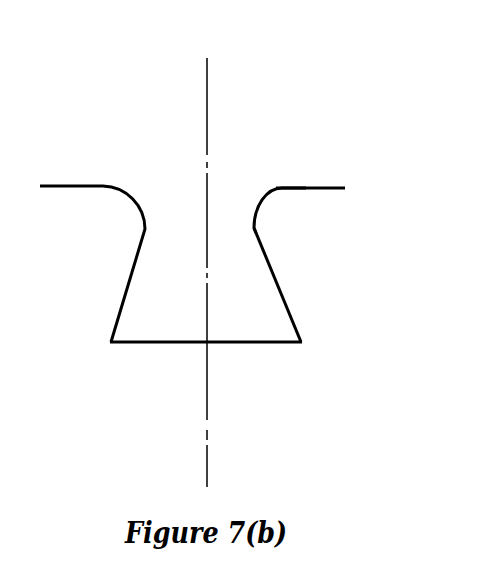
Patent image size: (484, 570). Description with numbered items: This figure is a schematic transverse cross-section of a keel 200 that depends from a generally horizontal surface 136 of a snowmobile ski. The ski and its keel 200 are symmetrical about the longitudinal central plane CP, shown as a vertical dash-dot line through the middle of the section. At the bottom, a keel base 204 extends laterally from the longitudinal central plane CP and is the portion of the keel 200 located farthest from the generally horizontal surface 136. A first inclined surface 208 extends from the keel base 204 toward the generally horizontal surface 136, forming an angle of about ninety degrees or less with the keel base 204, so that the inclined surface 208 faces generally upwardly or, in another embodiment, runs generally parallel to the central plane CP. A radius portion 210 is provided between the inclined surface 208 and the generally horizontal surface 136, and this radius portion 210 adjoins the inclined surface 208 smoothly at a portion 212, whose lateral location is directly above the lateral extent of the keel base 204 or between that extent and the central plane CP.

The longitudinal central plane CP is at (207, 73).
The keel 200 is at (247, 257).
The keel base 204 is at (270, 343).
The inclined surface 208 is at (293, 323).
The radius portion 210 is at (275, 189).
The portion 212 is at (144, 229).
The generally horizontal surface 136 is at (328, 189).